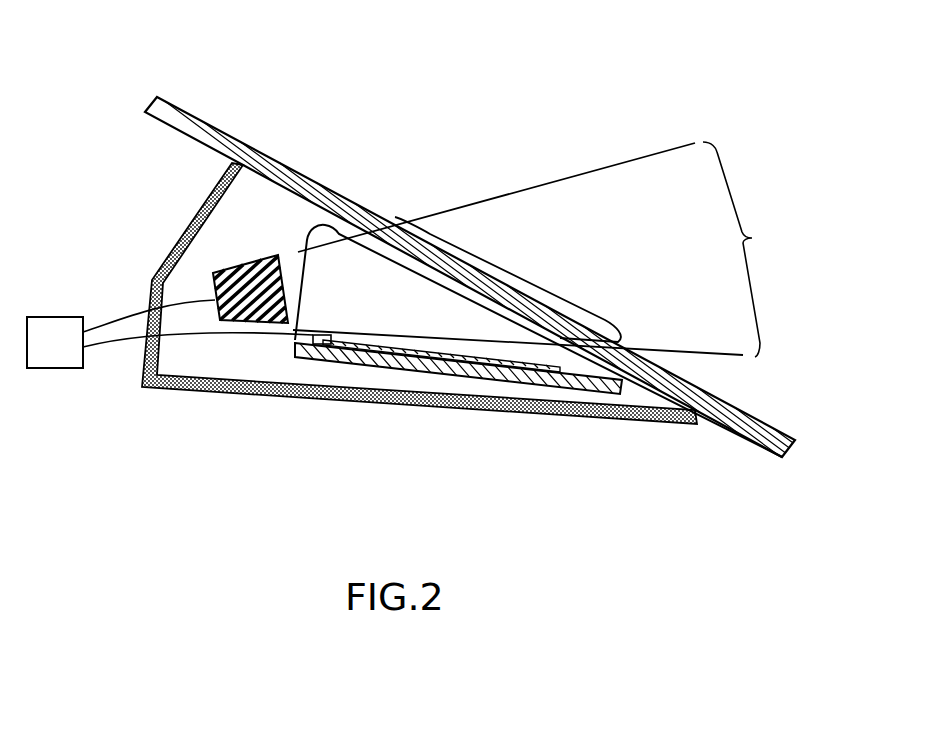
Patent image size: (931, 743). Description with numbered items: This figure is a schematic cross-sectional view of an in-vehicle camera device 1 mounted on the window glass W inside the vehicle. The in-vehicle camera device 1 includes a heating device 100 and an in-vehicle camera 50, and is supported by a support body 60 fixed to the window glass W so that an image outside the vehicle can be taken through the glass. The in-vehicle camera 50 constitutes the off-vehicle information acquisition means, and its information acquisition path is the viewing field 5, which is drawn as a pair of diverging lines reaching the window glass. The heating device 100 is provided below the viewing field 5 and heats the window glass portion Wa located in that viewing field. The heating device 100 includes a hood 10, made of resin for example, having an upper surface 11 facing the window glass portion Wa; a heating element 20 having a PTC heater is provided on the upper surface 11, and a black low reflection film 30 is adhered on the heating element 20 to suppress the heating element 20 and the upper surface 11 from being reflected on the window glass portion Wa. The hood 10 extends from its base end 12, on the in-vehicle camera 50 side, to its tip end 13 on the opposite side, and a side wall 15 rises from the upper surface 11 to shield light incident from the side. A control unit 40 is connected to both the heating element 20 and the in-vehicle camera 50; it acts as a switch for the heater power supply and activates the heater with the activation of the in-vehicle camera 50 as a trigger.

The window glass W is at (156, 96).
The window glass portion Wa is at (540, 290).
The in-vehicle camera device 1 is at (242, 236).
The viewing field 5 is at (534, 249).
The hood 10 is at (443, 367).
The upper surface 11 is at (327, 337).
The base end 12 is at (288, 350).
The tip end 13 is at (640, 395).
The side wall 15 is at (325, 237).
The heating element 20 is at (441, 322).
The low reflection film 30 is at (387, 340).
The control unit 40 is at (57, 360).
The in-vehicle camera 50 is at (213, 280).
The support body 60 is at (190, 390).
The heating device 100 is at (407, 373).